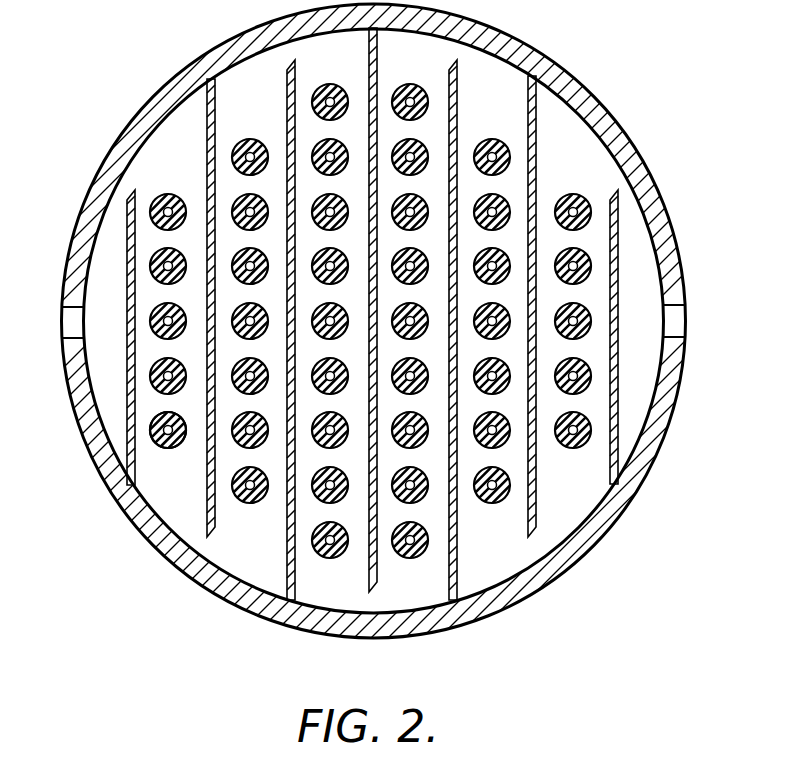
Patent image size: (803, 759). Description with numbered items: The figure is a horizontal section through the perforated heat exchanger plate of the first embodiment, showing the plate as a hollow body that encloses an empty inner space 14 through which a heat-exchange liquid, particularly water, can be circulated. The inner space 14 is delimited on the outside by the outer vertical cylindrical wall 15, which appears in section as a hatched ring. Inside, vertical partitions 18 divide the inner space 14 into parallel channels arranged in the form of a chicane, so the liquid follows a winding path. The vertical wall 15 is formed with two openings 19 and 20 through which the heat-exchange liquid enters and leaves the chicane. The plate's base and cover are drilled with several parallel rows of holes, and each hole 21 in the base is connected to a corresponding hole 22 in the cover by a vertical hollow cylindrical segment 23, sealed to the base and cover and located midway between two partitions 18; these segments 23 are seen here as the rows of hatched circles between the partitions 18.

The inner space 14 is at (580, 480).
The outer vertical cylindrical wall 15 is at (657, 190).
The vertical partitions 18 is at (538, 106).
The opening 19 is at (675, 310).
The opening 20 is at (68, 317).
The hole 21 is at (320, 363).
The hole 22 is at (119, 527).
The vertical hollow cylindrical segment 23 is at (183, 447).